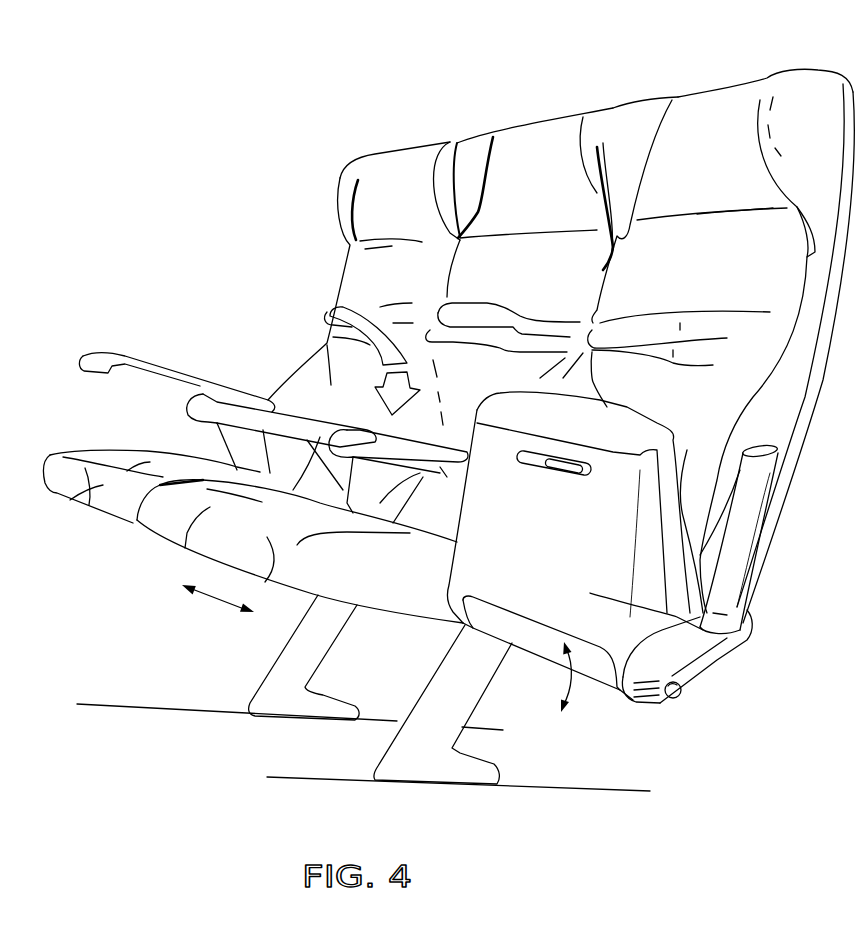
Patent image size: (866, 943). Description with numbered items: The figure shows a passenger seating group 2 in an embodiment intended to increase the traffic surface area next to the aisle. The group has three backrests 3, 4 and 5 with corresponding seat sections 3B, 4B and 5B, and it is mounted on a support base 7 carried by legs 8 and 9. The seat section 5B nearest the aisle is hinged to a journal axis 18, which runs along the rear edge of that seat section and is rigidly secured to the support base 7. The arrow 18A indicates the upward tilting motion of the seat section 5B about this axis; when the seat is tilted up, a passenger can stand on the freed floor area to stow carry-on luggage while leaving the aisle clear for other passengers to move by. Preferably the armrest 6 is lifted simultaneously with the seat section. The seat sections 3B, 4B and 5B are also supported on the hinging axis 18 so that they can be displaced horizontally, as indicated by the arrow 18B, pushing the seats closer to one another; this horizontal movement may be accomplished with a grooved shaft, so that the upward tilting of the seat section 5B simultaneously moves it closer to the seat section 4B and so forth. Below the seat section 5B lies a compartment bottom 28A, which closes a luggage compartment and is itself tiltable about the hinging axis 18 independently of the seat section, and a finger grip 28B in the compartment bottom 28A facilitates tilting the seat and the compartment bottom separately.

The seating group 2 is at (268, 225).
The backrest 3 is at (392, 172).
The backrest 4 is at (533, 150).
The backrest 5 is at (708, 123).
The seat section 3B is at (103, 485).
The seat section 4B is at (217, 537).
The seat section 5B is at (567, 563).
The armrest 6 is at (732, 563).
The support base 7 is at (246, 748).
The leg 8 is at (278, 695).
The leg 9 is at (407, 757).
The journal axis 18 is at (681, 693).
The arrow 18A is at (560, 666).
The arrow 18B is at (210, 603).
The compartment bottom 28A is at (703, 630).
The finger grip 28B is at (530, 458).